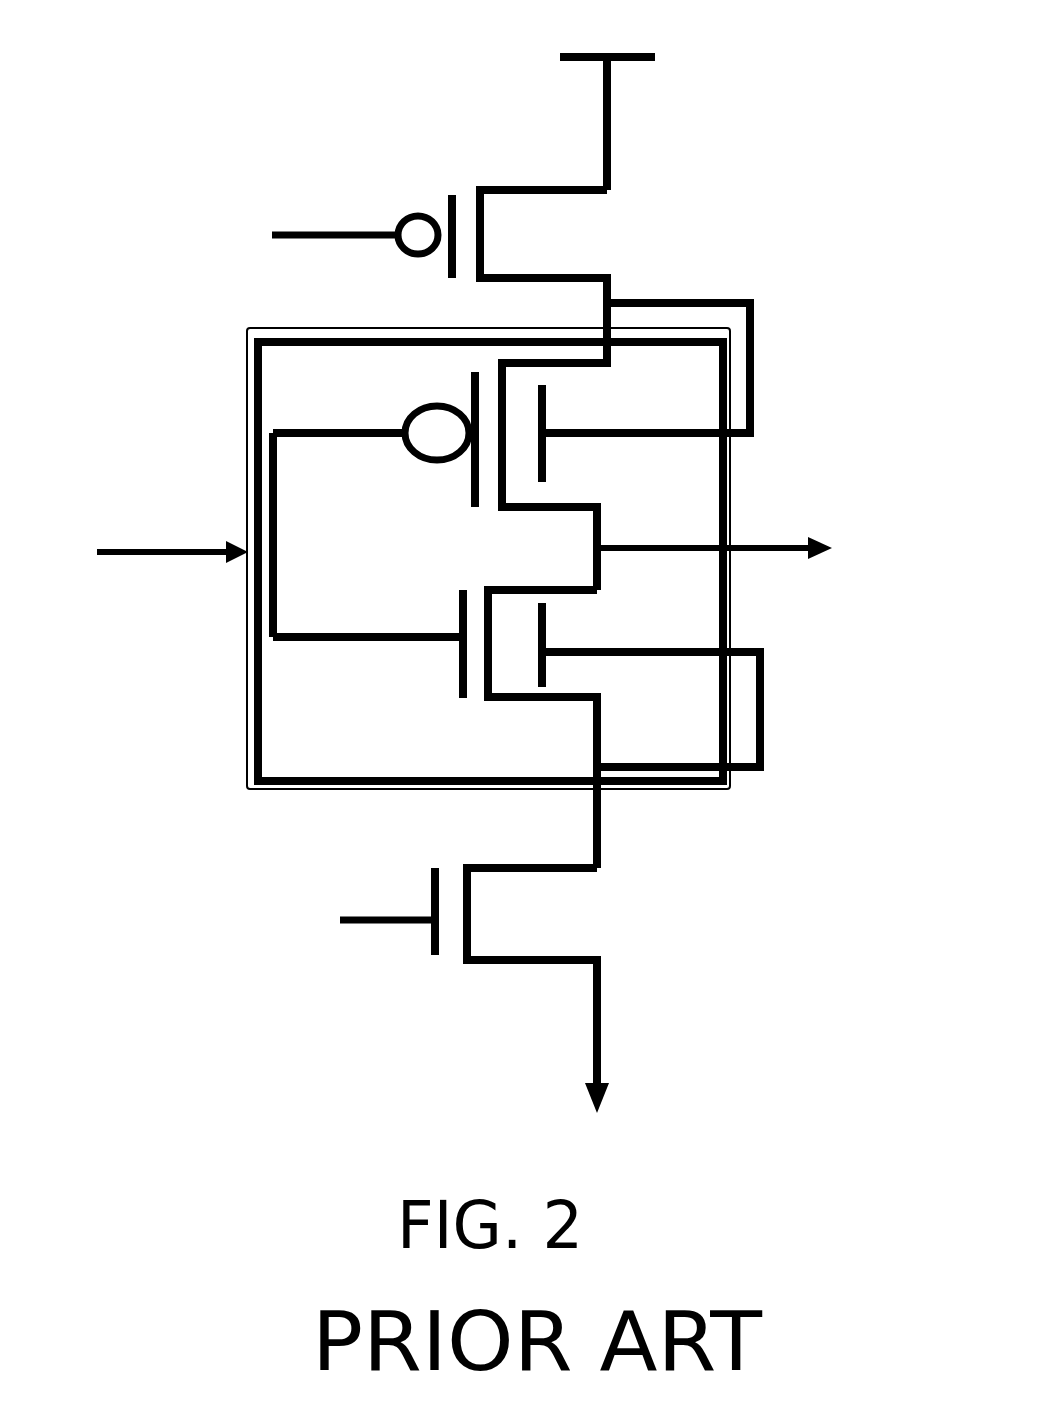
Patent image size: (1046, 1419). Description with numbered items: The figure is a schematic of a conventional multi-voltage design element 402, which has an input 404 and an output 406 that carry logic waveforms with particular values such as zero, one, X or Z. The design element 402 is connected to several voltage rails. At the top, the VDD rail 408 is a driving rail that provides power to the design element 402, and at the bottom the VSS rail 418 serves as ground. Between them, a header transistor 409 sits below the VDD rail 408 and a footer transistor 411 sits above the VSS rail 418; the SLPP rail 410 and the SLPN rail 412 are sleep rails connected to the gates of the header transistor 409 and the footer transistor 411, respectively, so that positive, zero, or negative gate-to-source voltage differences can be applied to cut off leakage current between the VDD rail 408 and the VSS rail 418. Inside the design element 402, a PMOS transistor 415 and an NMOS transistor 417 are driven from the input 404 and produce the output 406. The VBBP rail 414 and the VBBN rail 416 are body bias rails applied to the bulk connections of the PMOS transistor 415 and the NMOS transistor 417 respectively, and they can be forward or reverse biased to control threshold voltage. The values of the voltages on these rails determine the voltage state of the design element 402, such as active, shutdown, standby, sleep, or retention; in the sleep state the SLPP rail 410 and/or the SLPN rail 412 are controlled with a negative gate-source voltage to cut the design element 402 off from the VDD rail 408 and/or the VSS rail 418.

The design element 402 is at (222, 710).
The input 404 is at (183, 553).
The output 406 is at (767, 549).
The VDD rail 408 is at (637, 65).
The header transistor 409 is at (500, 150).
The SLPP rail 410 is at (348, 236).
The footer transistor 411 is at (495, 992).
The SLPN rail 412 is at (390, 922).
The VBBP rail 414 is at (754, 336).
The PMOS transistor 415 is at (448, 487).
The VBBN rail 416 is at (762, 737).
The NMOS transistor 417 is at (433, 678).
The VSS rail 418 is at (600, 1020).